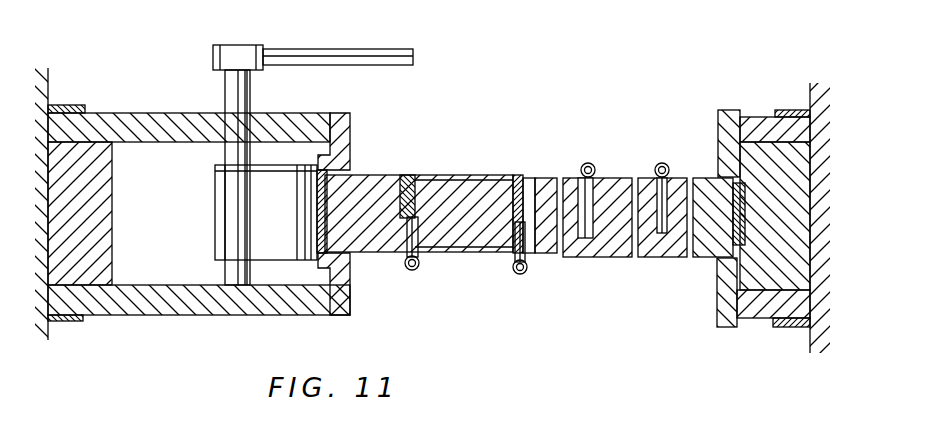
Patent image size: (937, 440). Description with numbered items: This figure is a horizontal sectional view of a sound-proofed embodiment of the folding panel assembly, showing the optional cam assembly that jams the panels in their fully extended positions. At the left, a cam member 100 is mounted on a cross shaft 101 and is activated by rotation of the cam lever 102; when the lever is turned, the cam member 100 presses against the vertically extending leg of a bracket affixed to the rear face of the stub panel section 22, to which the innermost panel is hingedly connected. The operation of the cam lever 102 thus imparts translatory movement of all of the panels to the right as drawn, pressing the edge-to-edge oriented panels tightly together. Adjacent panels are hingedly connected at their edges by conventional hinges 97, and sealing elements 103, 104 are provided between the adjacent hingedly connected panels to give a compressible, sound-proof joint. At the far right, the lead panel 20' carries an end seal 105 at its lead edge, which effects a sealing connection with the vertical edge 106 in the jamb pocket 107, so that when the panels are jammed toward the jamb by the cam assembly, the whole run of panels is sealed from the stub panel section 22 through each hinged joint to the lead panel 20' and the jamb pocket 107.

The stub panel section 22 is at (373, 252).
The hinges 97 is at (513, 272).
The cam member 100 is at (283, 248).
The cross shaft 101 is at (230, 92).
The cam lever 102 is at (323, 49).
The sealing element 103 is at (411, 176).
The sealing element 104 is at (532, 188).
The end seal 105 is at (718, 270).
The vertical edge 106 is at (750, 187).
The jamb pocket 107 is at (733, 180).
The lead panel 20' is at (686, 244).